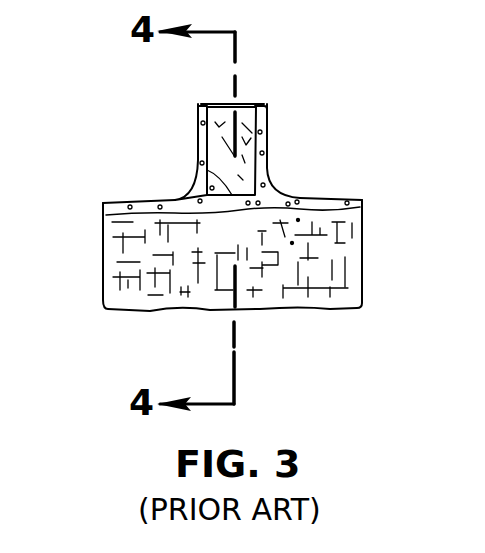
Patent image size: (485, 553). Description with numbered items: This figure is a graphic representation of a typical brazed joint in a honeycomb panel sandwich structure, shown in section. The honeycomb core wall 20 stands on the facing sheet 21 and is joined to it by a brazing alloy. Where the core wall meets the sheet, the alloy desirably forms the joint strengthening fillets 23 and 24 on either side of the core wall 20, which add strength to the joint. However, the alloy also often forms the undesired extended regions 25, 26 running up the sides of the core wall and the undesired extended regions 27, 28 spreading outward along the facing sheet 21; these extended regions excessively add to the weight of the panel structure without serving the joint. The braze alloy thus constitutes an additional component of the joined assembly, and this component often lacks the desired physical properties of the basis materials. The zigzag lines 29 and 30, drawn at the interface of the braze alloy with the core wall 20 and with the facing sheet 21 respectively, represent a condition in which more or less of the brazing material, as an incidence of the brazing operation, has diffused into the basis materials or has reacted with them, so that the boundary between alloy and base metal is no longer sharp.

The honeycomb core wall 20 is at (258, 140).
The facing sheet 21 is at (359, 310).
The joint strengthening fillet 23 is at (277, 186).
The joint strengthening fillet 24 is at (176, 197).
The extended region 25 is at (197, 113).
The extended region 26 is at (263, 105).
The extended region 27 is at (102, 202).
The extended region 28 is at (350, 198).
The zigzag line 29 is at (200, 167).
The zigzag line 30 is at (108, 216).